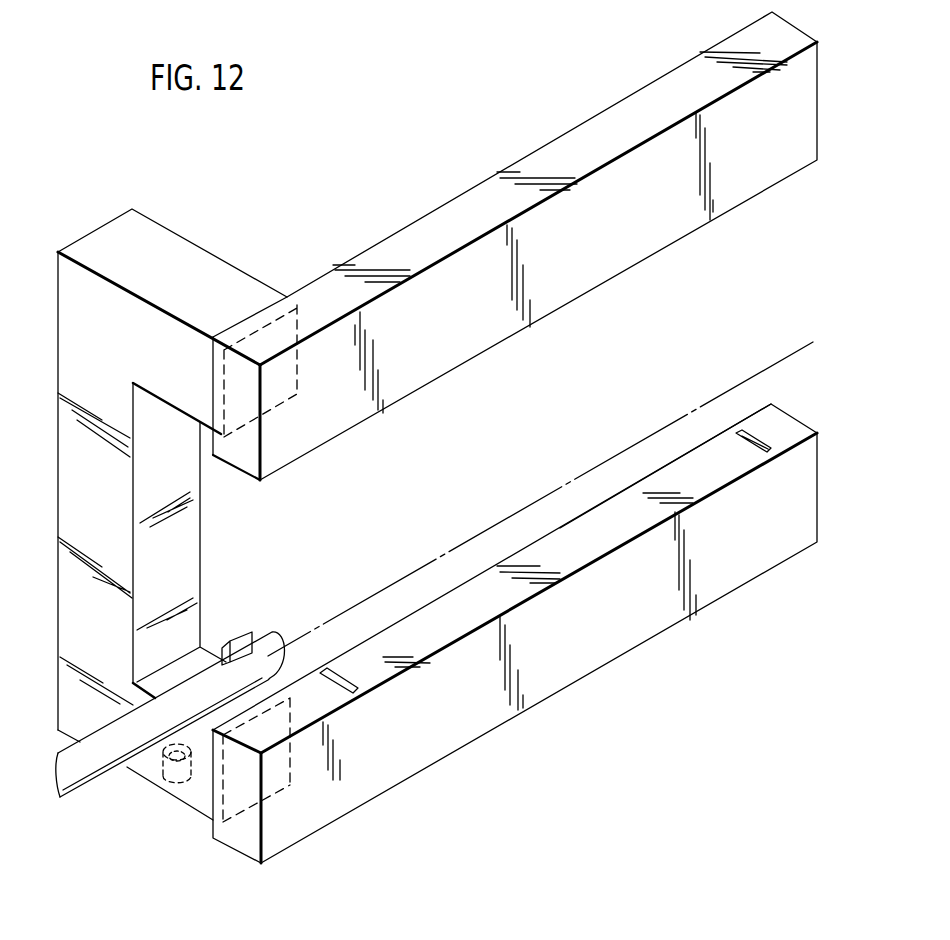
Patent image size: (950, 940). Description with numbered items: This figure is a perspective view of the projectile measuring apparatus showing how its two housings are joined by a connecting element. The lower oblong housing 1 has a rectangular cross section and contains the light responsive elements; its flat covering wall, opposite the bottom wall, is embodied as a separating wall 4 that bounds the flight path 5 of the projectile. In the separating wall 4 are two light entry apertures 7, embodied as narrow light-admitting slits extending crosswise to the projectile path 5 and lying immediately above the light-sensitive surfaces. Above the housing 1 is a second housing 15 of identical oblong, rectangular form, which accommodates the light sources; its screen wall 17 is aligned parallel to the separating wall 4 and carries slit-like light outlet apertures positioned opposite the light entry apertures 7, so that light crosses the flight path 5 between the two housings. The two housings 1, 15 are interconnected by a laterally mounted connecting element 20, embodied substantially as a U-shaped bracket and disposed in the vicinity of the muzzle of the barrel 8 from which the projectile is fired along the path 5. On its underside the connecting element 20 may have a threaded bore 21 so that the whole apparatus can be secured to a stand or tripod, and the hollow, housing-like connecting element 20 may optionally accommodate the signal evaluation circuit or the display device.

The housing 1 is at (283, 832).
The separating wall 4 is at (625, 505).
The flight path 5 is at (423, 567).
The light entry apertures 7 is at (741, 438).
The barrel 8 is at (97, 767).
The second housing 15 is at (460, 212).
The screen wall 17 is at (232, 468).
The connecting element 20 is at (205, 275).
The threaded bore 21 is at (171, 780).